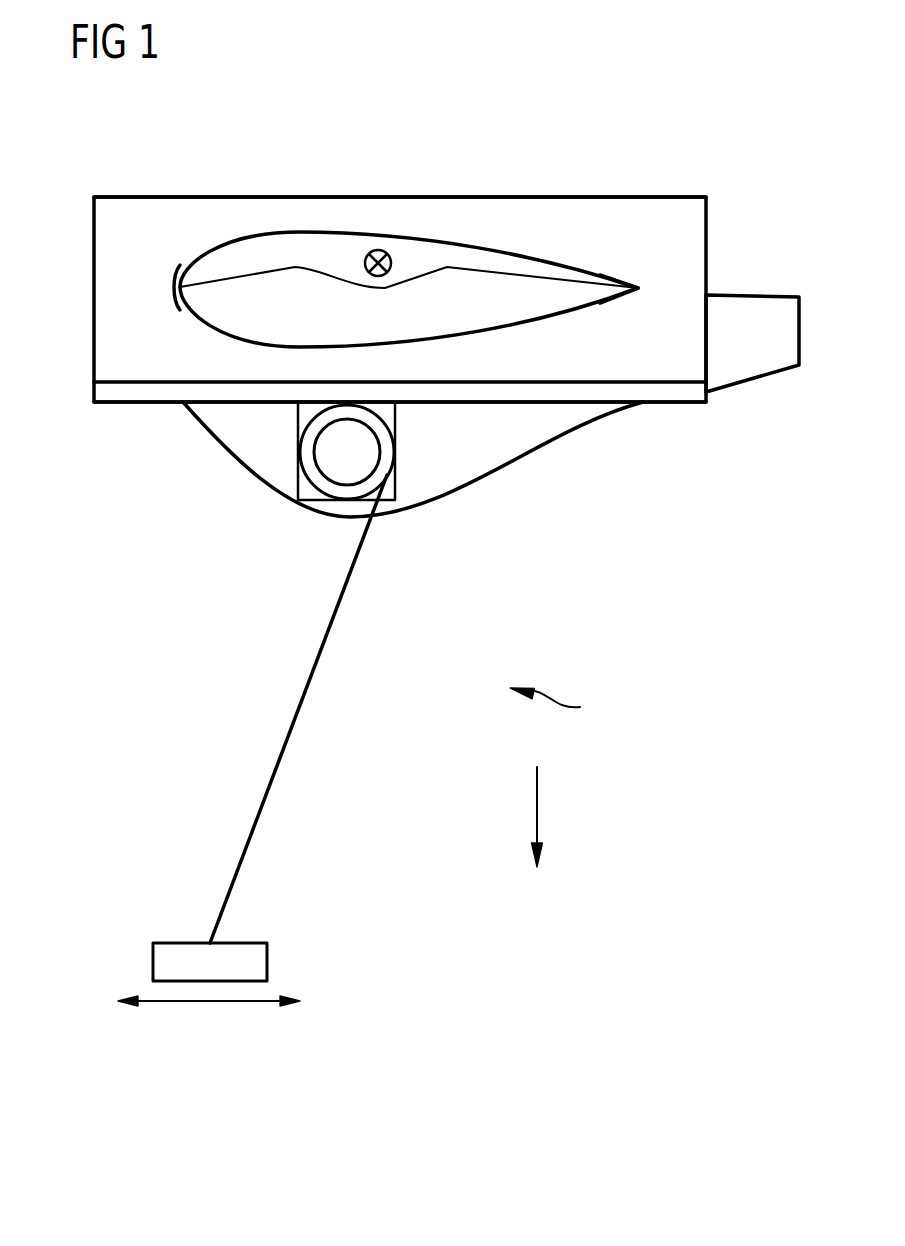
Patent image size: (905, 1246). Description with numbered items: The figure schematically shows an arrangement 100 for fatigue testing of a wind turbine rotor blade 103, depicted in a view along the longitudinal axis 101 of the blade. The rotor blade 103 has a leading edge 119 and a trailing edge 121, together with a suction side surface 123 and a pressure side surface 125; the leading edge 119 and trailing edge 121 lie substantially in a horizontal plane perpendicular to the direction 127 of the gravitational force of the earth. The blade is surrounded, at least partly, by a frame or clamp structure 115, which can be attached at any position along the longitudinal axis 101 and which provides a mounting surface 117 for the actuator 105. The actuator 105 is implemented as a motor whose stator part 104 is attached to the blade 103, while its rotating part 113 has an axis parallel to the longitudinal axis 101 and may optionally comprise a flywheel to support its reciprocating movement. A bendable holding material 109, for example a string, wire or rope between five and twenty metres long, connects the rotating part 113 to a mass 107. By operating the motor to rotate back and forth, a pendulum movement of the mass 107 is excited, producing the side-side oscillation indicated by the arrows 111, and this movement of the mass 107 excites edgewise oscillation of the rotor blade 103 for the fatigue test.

The arrangement for fatigue testing 100 is at (570, 706).
The longitudinal axis 101 is at (378, 250).
The rotor blade 103 is at (250, 165).
The stator part 104 is at (310, 492).
The actuator 105 is at (270, 535).
The mass 107 is at (153, 960).
The bendable holding material 109 is at (275, 773).
The arrows 111 is at (210, 1003).
The rotating part 113 is at (387, 452).
The frame or clamp structure 115 is at (505, 205).
The mounting surface 117 is at (160, 415).
The leading edge 119 is at (180, 287).
The trailing edge 121 is at (642, 288).
The suction side surface 123 is at (542, 248).
The pressure side surface 125 is at (560, 306).
The direction of the gravitational force 127 is at (537, 810).